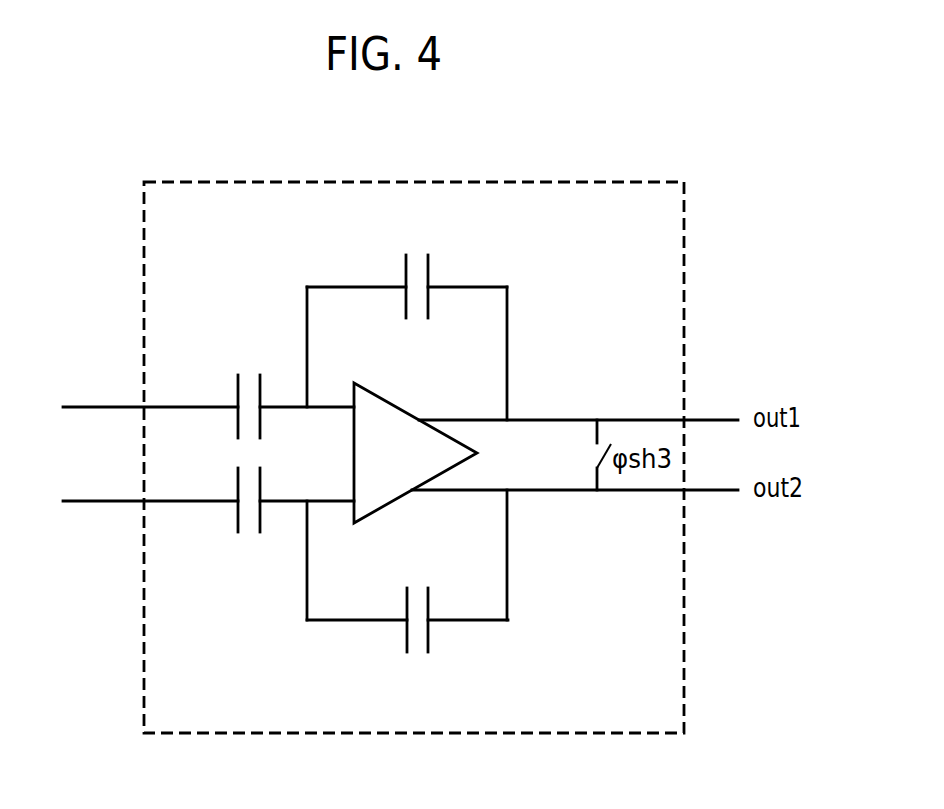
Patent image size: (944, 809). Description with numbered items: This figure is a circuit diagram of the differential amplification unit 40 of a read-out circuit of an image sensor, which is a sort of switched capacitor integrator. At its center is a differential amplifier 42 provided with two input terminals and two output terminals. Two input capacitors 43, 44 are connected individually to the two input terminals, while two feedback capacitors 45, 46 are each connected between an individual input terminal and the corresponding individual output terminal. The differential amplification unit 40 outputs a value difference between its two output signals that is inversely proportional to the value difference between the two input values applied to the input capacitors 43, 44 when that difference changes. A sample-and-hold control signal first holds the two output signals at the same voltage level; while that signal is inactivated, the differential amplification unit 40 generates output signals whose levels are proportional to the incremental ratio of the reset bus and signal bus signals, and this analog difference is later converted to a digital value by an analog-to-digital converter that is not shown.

The differential amplification unit 40 is at (555, 182).
The differential amplifier 42 is at (460, 442).
The input capacitor 43 is at (237, 392).
The input capacitor 44 is at (237, 517).
The feedback capacitor 45 is at (430, 272).
The feedback capacitor 46 is at (430, 638).